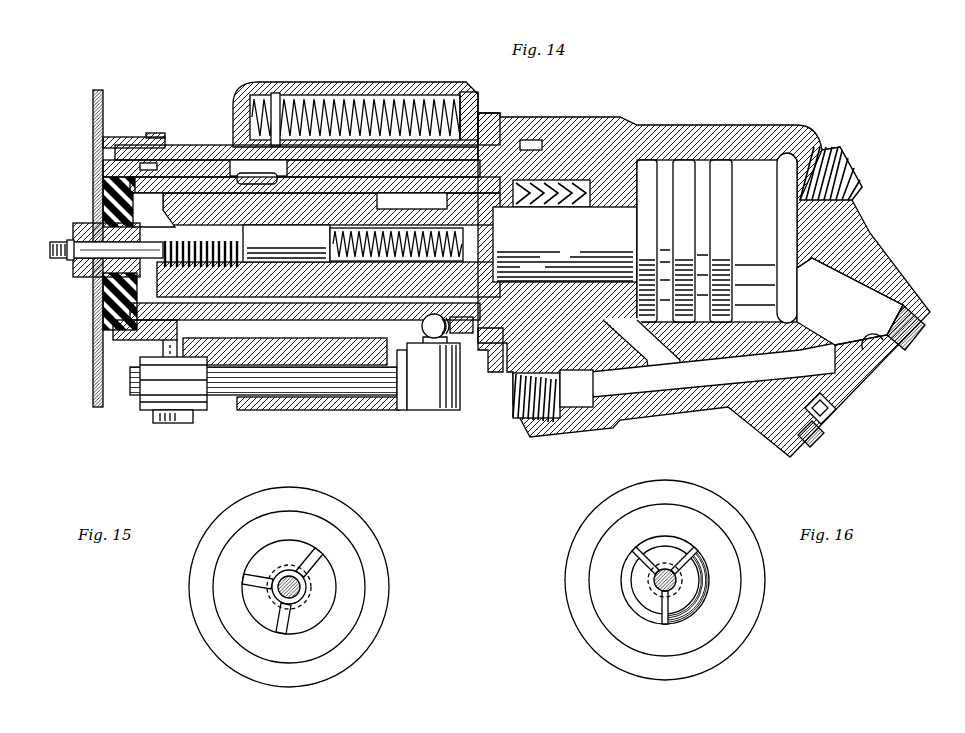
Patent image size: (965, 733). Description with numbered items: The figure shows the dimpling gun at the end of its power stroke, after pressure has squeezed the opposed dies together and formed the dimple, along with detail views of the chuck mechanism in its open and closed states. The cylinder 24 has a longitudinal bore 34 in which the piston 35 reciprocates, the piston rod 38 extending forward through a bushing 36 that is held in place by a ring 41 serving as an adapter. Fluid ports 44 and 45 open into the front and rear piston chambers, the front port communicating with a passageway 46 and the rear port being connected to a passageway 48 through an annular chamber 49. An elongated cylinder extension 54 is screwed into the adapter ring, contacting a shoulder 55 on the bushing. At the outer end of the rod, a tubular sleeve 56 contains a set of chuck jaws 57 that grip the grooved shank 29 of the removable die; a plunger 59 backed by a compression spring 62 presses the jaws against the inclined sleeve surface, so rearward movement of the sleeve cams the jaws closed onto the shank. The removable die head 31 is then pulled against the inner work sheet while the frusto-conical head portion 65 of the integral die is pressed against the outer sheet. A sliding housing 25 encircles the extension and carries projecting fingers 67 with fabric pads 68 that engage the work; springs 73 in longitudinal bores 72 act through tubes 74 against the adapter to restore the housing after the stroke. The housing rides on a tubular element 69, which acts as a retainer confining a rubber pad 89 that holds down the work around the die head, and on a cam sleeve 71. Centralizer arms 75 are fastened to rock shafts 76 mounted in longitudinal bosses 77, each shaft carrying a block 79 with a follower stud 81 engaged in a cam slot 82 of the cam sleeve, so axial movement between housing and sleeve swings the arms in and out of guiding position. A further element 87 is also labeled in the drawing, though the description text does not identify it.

In FIG. 14, the cylinder 24 is at (810, 133).
In FIG. 14, the sliding housing 25 is at (330, 81).
In FIG. 14, the shank of the removable die 29 is at (72, 263).
In FIG. 15, the shank of the removable die 29 is at (273, 593).
In FIG. 16, the shank of the removable die 29 is at (660, 582).
In FIG. 14, the head of the removable die 31 is at (73, 224).
In FIG. 14, the longitudinal bore 34 is at (743, 165).
In FIG. 14, the piston 35 is at (722, 244).
In FIG. 14, the bushing 36 is at (505, 204).
In FIG. 14, the piston rod 38 is at (598, 240).
In FIG. 14, the ring 41 is at (495, 115).
In FIG. 14, the fluid port 44 is at (652, 353).
In FIG. 14, the fluid port 45 is at (897, 290).
In FIG. 14, the passageway 46 is at (717, 375).
In FIG. 14, the passageway 48 is at (818, 424).
In FIG. 14, the annular chamber 49 is at (887, 354).
In FIG. 14, the cylinder extension 54 is at (502, 165).
In FIG. 14, the shoulder 55 is at (468, 333).
In FIG. 14, the tubular sleeve 56 is at (197, 183).
In FIG. 15, the tubular sleeve 56 is at (353, 552).
In FIG. 16, the tubular sleeve 56 is at (735, 550).
In FIG. 14, the chuck jaws 57 is at (222, 275).
In FIG. 15, the chuck jaws 57 is at (290, 546).
In FIG. 16, the chuck jaws 57 is at (662, 550).
In FIG. 14, the plunger 59 is at (282, 247).
In FIG. 14, the compression spring 62 is at (497, 233).
In FIG. 14, the head portion 65 is at (103, 210).
In FIG. 14, the projecting fingers 67 is at (178, 146).
In FIG. 14, the fabric pad 68 is at (108, 137).
In FIG. 14, the tubular element 69 is at (140, 338).
In FIG. 14, the tubular element 71 is at (418, 170).
In FIG. 14, the longitudinal bores 72 is at (278, 96).
In FIG. 14, the spring 73 is at (418, 97).
In FIG. 14, the tube 74 is at (378, 93).
In FIG. 14, the centralizer arms 75 is at (165, 355).
In FIG. 14, the rock shafts 76 is at (232, 392).
In FIG. 14, the longitudinal bosses 77 is at (290, 407).
In FIG. 14, the block 79 is at (432, 401).
In FIG. 14, the follower stud 81 is at (421, 327).
In FIG. 14, the cam slot 82 is at (377, 330).
In FIG. 14, the stem 87 is at (177, 348).
In FIG. 14, the rubber pad 89 is at (110, 300).